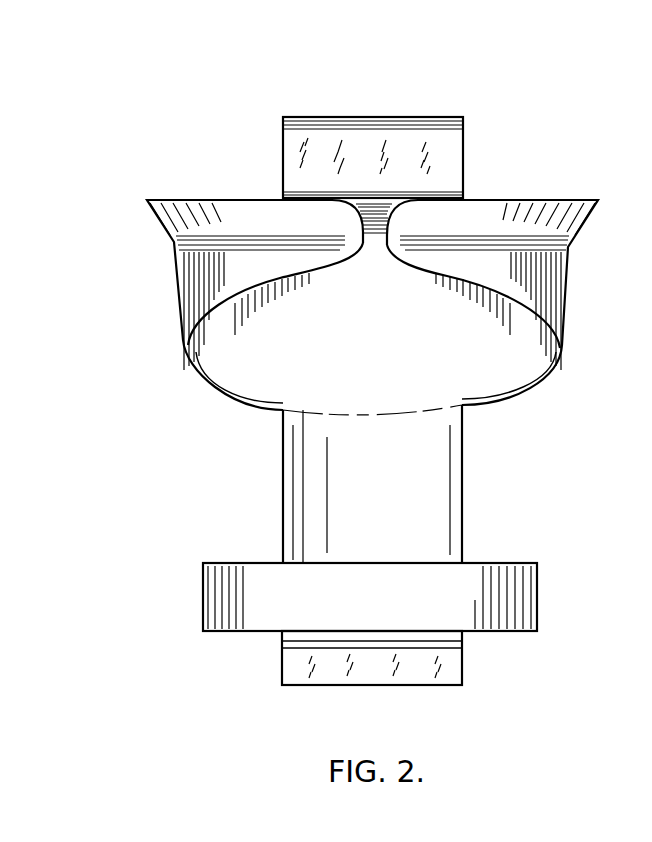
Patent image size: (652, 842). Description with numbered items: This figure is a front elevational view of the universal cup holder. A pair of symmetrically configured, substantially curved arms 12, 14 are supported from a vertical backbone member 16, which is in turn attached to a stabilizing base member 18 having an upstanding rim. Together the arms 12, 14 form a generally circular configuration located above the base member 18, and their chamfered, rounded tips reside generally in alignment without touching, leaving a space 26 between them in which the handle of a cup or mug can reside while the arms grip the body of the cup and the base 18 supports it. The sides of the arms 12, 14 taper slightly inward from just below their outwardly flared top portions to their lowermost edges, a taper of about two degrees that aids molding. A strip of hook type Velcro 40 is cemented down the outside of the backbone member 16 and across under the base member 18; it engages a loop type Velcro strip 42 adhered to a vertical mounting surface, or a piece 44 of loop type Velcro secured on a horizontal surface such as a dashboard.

The strip of loop type Velcro 42 is at (400, 140).
The arm 12 is at (187, 280).
The arm 14 is at (553, 272).
The space 26 is at (373, 240).
The vertical backbone member 16 is at (283, 460).
The base member 18 is at (534, 623).
The hook type Velcro 40 is at (283, 637).
The piece of loop type Velcro 44 is at (328, 647).